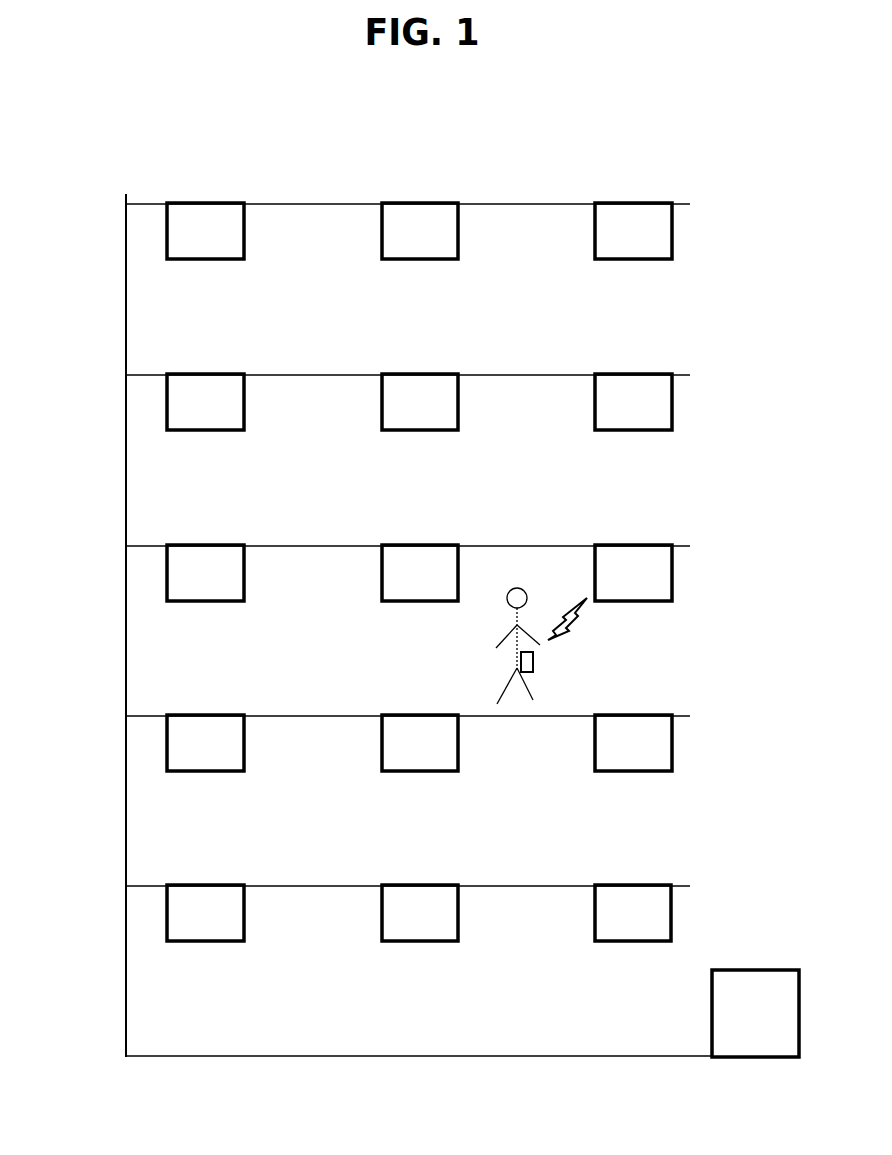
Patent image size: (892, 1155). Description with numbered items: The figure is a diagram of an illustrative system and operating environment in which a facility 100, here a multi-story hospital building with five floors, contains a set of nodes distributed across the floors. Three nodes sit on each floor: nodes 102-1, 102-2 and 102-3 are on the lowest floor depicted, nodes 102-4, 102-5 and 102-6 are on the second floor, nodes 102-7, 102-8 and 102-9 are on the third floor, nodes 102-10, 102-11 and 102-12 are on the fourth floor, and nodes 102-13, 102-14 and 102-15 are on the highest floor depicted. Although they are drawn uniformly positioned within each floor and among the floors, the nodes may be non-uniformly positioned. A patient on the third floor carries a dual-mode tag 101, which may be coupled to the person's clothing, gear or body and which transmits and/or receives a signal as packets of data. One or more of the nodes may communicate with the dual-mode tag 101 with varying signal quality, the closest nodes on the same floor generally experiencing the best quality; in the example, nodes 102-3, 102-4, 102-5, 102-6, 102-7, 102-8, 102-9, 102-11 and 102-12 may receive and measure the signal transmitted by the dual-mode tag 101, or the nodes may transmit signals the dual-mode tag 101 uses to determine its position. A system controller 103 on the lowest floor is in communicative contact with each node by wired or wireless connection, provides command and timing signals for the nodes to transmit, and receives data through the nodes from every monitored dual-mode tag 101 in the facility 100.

The facility 100 is at (424, 95).
The dual-mode tag 101 is at (533, 665).
The node 102-1 is at (230, 921).
The node 102-2 is at (444, 921).
The node 102-3 is at (657, 921).
The node 102-4 is at (230, 751).
The node 102-5 is at (444, 751).
The node 102-6 is at (657, 751).
The node 102-7 is at (230, 581).
The node 102-8 is at (444, 581).
The node 102-9 is at (657, 581).
The node 102-10 is at (238, 410).
The node 102-11 is at (452, 410).
The node 102-12 is at (665, 410).
The node 102-13 is at (238, 239).
The node 102-14 is at (452, 239).
The node 102-15 is at (665, 239).
The system controller 103 is at (755, 1005).